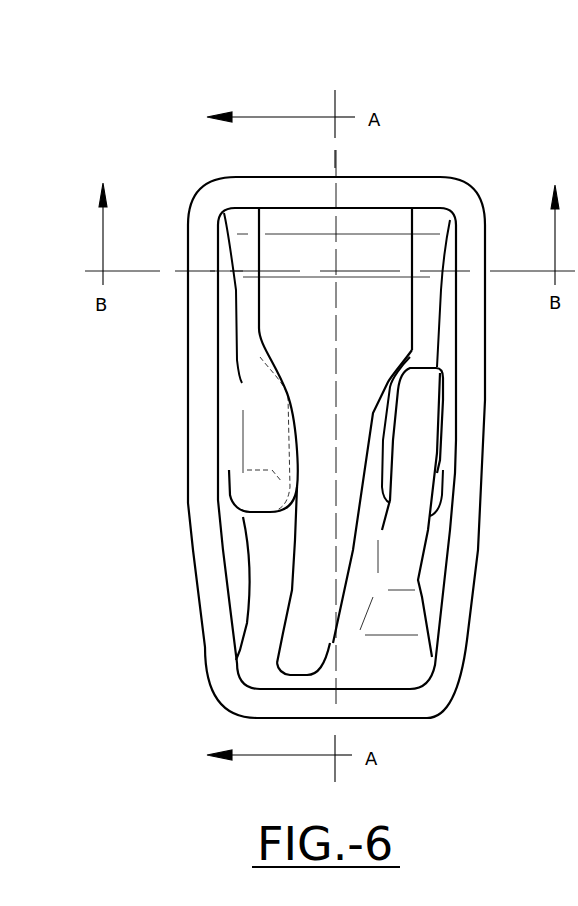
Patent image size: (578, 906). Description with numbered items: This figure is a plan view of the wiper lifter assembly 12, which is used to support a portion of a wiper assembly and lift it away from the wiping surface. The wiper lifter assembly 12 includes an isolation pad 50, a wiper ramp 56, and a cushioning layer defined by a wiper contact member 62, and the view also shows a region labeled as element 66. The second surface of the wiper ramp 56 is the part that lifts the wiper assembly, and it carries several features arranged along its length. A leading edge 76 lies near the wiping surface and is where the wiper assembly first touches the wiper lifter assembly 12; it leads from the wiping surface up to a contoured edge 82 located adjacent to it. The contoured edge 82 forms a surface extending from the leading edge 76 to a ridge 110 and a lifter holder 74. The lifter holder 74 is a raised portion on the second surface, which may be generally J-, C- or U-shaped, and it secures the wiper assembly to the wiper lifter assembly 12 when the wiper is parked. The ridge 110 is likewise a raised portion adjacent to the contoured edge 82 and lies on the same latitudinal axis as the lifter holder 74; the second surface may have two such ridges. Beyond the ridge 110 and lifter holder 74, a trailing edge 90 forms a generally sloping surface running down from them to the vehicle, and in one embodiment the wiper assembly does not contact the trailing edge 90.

The wiper lifter assembly 12 is at (490, 140).
The isolation pad 50 is at (253, 183).
The wiper ramp 56 is at (430, 220).
The wiper contact member 62 is at (355, 375).
The center tab 66 is at (353, 223).
The lifter holder 74 is at (427, 408).
The leading edge 76 is at (240, 223).
The contoured edge 82 is at (243, 327).
The trailing edge 90 is at (297, 645).
The ridge 110 is at (253, 435).